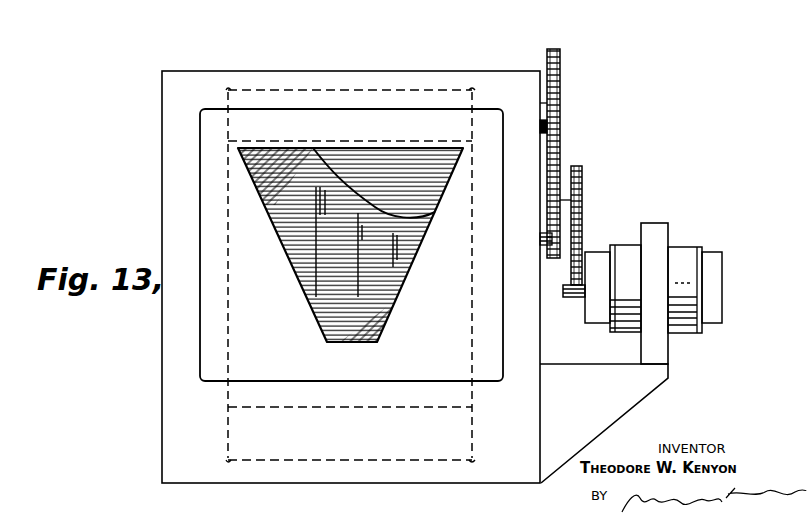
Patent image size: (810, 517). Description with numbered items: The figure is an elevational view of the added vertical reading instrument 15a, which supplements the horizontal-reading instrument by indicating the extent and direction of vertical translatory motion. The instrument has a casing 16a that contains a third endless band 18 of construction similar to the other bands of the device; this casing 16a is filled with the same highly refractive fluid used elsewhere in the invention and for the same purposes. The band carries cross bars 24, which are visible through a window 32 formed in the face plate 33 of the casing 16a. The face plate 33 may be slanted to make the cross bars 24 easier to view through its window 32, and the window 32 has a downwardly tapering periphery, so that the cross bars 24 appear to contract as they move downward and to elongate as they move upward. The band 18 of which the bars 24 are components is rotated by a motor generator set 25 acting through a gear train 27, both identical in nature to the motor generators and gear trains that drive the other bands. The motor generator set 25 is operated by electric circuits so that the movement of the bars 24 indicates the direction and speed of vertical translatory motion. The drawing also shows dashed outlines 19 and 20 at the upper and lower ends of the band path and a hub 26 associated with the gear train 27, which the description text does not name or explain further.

The vertical reading instrument 15a is at (155, 387).
The casing 16a is at (162, 134).
The endless band 18 is at (479, 346).
The upper mask 19 is at (413, 90).
The lower mask 20 is at (348, 463).
The cross bars 24 is at (436, 180).
The motor generator set 25 is at (682, 236).
The pinion hub 26 is at (575, 299).
The gear train 27 is at (590, 181).
The window 32 is at (316, 297).
The face plate 33 is at (180, 347).